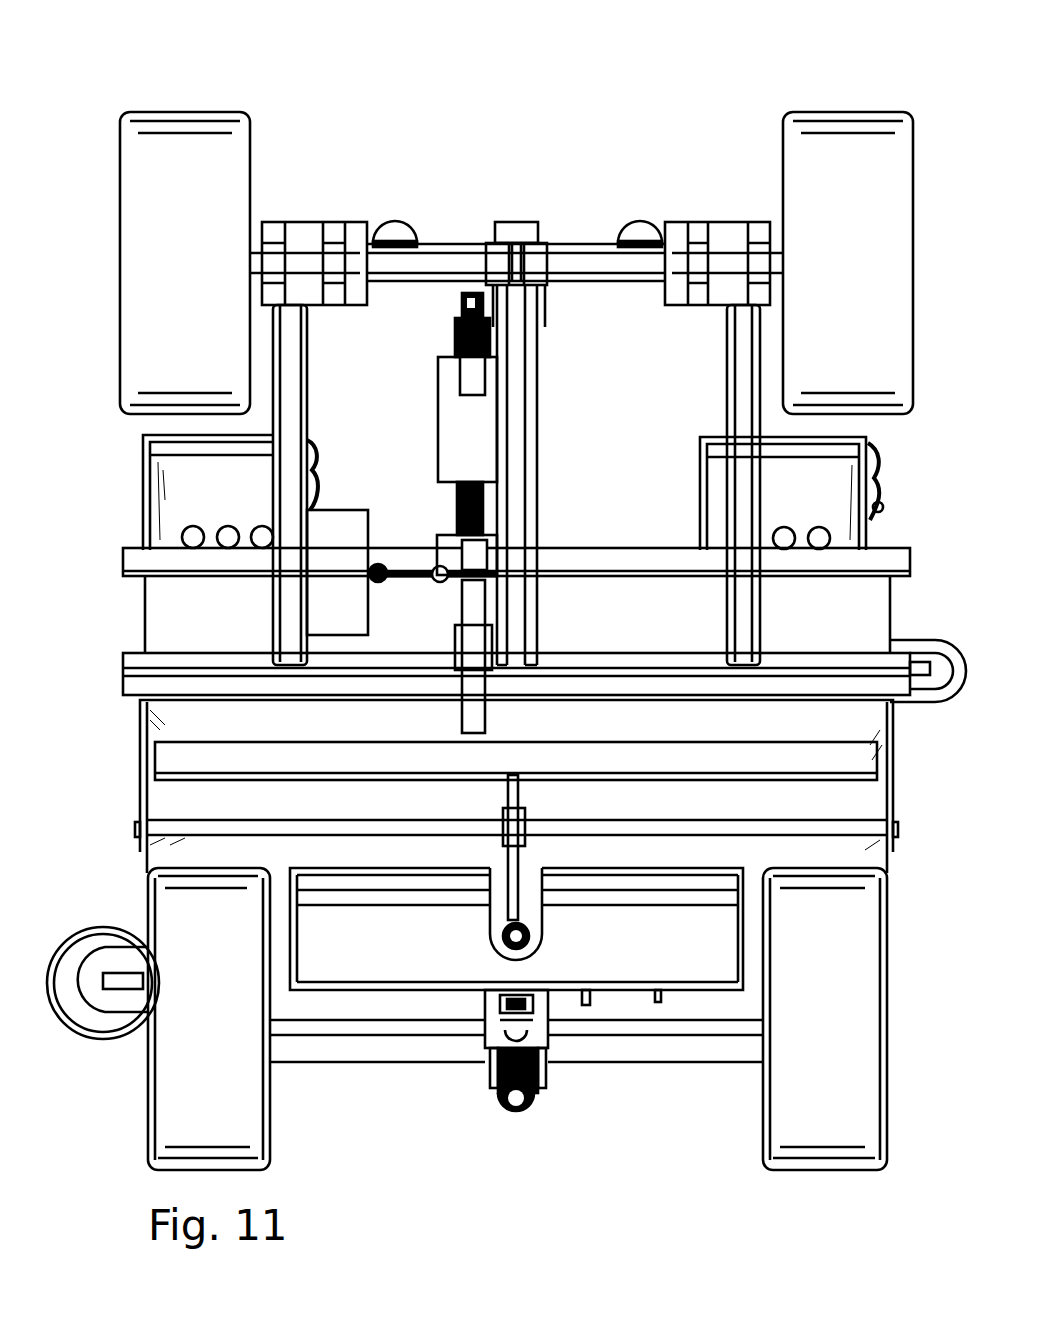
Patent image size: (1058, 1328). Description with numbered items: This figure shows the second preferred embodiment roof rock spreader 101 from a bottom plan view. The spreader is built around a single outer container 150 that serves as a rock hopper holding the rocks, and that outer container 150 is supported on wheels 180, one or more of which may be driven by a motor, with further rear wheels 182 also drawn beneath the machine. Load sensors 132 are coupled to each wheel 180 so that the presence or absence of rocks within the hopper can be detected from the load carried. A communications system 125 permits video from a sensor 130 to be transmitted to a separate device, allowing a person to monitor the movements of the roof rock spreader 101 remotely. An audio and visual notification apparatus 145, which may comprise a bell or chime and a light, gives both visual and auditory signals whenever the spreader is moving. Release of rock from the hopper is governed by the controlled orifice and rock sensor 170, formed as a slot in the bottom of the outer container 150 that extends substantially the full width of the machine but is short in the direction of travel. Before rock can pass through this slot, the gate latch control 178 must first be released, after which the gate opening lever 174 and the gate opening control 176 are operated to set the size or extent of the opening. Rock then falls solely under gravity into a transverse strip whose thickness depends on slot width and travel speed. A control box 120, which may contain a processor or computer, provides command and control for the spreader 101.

The roof rock spreader 101 is at (258, 36).
The wheels 180 is at (793, 160).
The load sensors 132 is at (723, 228).
The sensor 130 is at (637, 229).
The communications system 125 is at (165, 533).
The control box 120 is at (882, 484).
The outer container 150 is at (140, 641).
The gate latch control 178 is at (480, 711).
The controlled orifice and rock sensor 170 is at (899, 729).
The gate opening lever 174 is at (508, 878).
The gate opening control 176 is at (555, 1076).
The audio and visual notification apparatus 145 is at (85, 1044).
The rear wheels 182 is at (773, 1142).